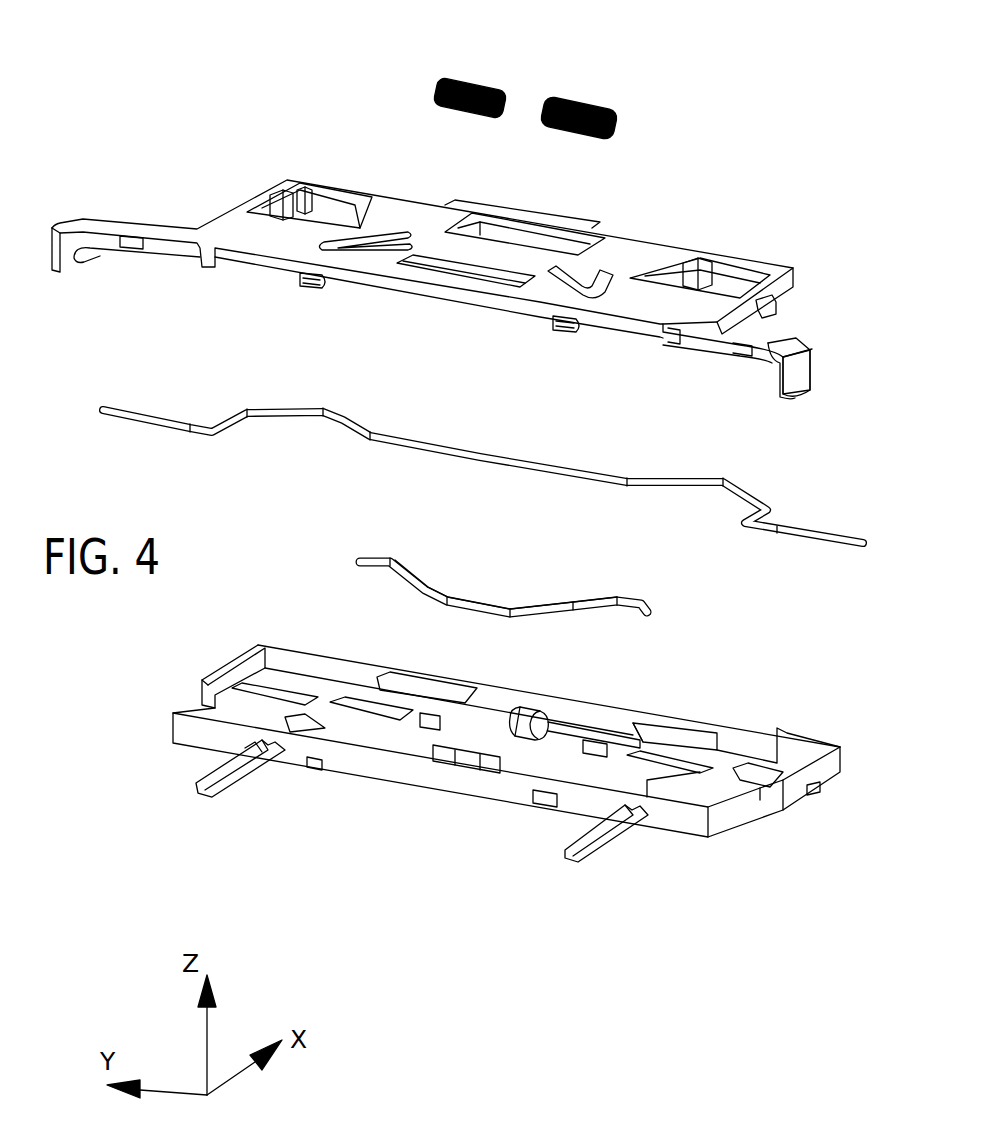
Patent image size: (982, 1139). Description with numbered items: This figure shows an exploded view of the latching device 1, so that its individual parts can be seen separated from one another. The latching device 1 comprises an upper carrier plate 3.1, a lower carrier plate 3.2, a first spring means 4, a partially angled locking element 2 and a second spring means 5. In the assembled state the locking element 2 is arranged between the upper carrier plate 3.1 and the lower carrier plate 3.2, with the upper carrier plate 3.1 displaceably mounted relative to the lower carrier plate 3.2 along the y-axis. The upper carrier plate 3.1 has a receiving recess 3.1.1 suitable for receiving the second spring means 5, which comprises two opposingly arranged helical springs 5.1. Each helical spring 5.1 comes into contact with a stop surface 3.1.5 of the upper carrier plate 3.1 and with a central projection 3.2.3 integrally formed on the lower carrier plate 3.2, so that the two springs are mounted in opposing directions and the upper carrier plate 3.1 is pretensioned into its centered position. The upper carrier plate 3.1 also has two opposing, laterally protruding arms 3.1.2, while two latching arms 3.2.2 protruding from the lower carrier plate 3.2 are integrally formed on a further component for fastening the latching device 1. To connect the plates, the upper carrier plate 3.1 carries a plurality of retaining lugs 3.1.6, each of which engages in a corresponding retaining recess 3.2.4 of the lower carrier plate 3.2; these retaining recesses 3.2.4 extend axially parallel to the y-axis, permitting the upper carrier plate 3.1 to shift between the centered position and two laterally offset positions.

The latching device 1 is at (730, 126).
The locking element 2 is at (746, 490).
The first spring means 4 is at (586, 602).
The second spring means 5 is at (582, 56).
The helical springs 5.1 is at (600, 100).
The upper carrier plate 3.1 is at (638, 255).
The receiving recess 3.1.1 is at (560, 230).
The arms 3.1.2 is at (805, 386).
The stop surface 3.1.5 is at (500, 179).
The retaining lugs 3.1.6 is at (306, 296).
The lower carrier plate 3.2 is at (723, 803).
The latching arms 3.2.2 is at (597, 865).
The central projection 3.2.3 is at (545, 710).
The retaining recesses 3.2.4 is at (330, 770).